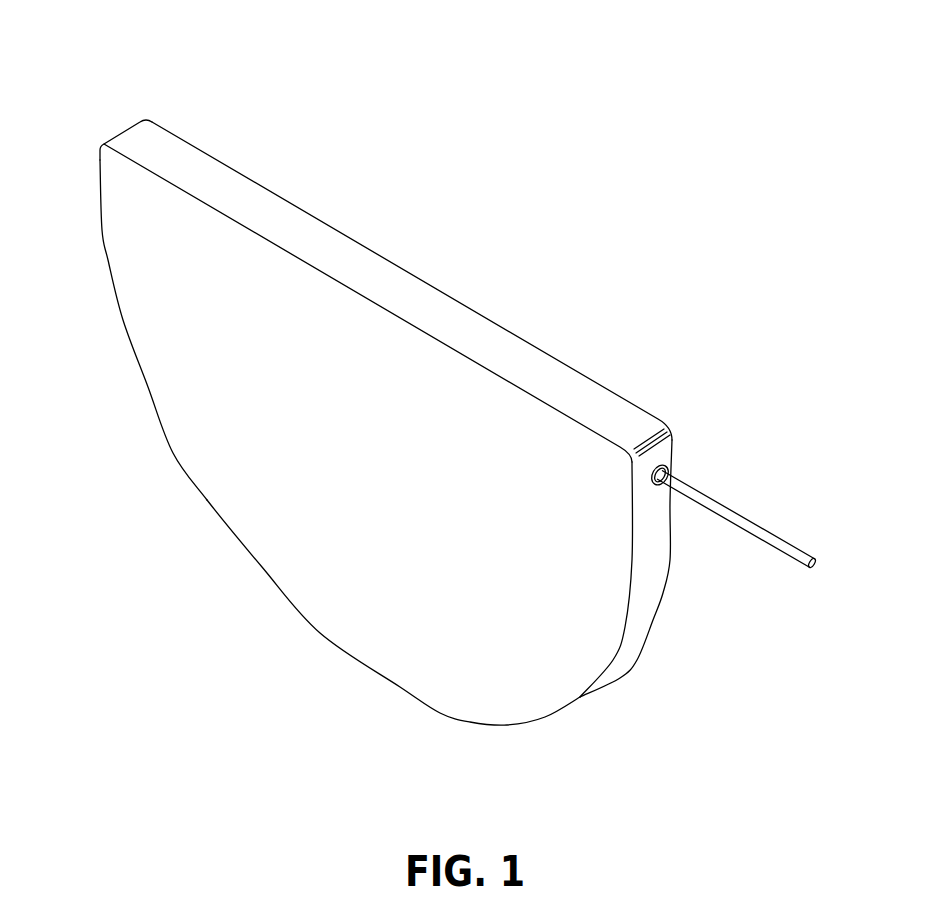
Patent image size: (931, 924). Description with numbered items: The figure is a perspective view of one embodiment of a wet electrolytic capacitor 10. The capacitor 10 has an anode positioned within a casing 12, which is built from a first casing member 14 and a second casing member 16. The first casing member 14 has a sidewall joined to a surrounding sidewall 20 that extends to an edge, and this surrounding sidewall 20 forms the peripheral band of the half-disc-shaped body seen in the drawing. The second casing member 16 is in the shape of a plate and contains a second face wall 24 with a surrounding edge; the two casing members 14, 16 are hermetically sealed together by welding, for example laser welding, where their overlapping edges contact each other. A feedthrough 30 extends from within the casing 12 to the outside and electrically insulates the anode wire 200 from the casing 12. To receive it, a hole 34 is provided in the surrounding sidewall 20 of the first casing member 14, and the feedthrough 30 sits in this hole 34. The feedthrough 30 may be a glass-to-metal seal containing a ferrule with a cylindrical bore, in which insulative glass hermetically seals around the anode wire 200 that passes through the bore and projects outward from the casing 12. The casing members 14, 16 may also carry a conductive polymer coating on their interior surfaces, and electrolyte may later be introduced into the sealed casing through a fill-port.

The capacitor 10 is at (427, 228).
The casing 12 is at (117, 126).
The first casing member 14 is at (518, 336).
The second casing member 16 is at (175, 455).
The surrounding sidewall 20 is at (548, 380).
The second face wall 24 is at (338, 622).
The feedthrough 30 is at (682, 468).
The hole 34 is at (662, 453).
The anode wire 200 is at (770, 535).